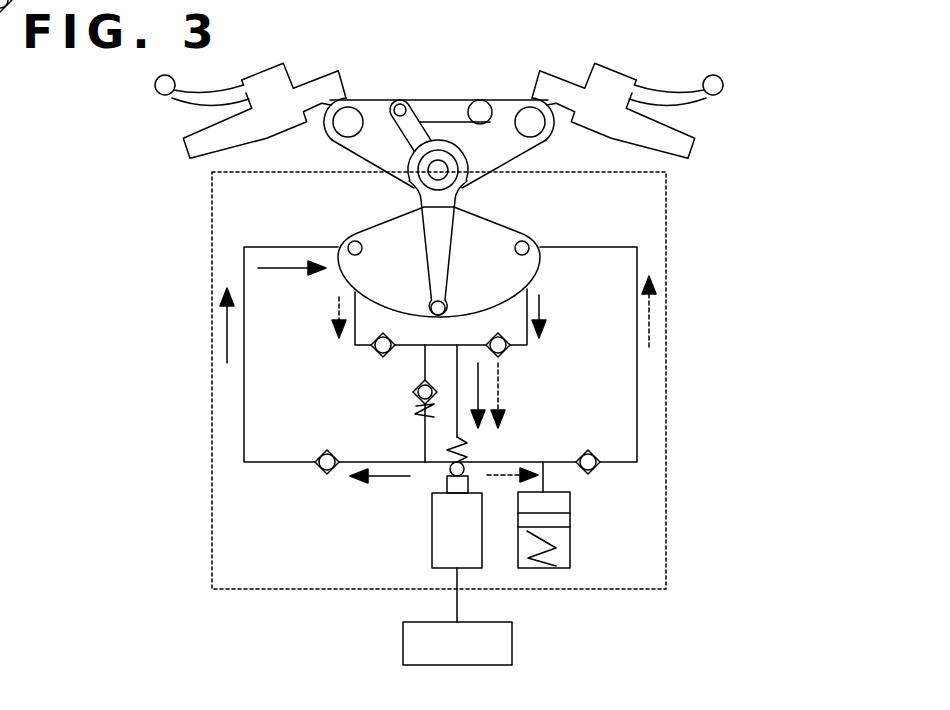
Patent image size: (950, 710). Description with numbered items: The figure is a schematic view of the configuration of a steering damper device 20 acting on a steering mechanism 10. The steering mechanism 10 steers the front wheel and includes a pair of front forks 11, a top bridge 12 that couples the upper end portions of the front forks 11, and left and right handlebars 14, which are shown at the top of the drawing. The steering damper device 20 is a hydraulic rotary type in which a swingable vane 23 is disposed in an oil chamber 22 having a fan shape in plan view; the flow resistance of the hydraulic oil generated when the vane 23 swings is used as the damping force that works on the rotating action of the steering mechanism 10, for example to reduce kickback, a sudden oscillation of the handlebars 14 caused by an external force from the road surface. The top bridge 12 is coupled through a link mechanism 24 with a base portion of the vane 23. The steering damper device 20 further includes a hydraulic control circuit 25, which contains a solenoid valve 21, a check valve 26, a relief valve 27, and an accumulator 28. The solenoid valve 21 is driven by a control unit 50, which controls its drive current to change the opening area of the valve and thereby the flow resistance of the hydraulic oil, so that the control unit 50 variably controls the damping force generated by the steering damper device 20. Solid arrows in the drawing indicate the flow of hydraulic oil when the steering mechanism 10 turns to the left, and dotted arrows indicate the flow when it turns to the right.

The steering mechanism 10 is at (447, 70).
The front forks 11 is at (349, 106).
The top bridge 12 is at (352, 100).
The handlebars 14 is at (182, 138).
The steering damper device 20 is at (699, 244).
The solenoid valve 21 is at (432, 548).
The oil chamber 22 is at (506, 228).
The vane 23 is at (421, 213).
The link mechanism 24 is at (425, 122).
The hydraulic control circuit 25 is at (667, 306).
The check valve 26 is at (510, 346).
The relief valve 27 is at (414, 398).
The accumulator 28 is at (570, 545).
The control unit 50 is at (512, 650).